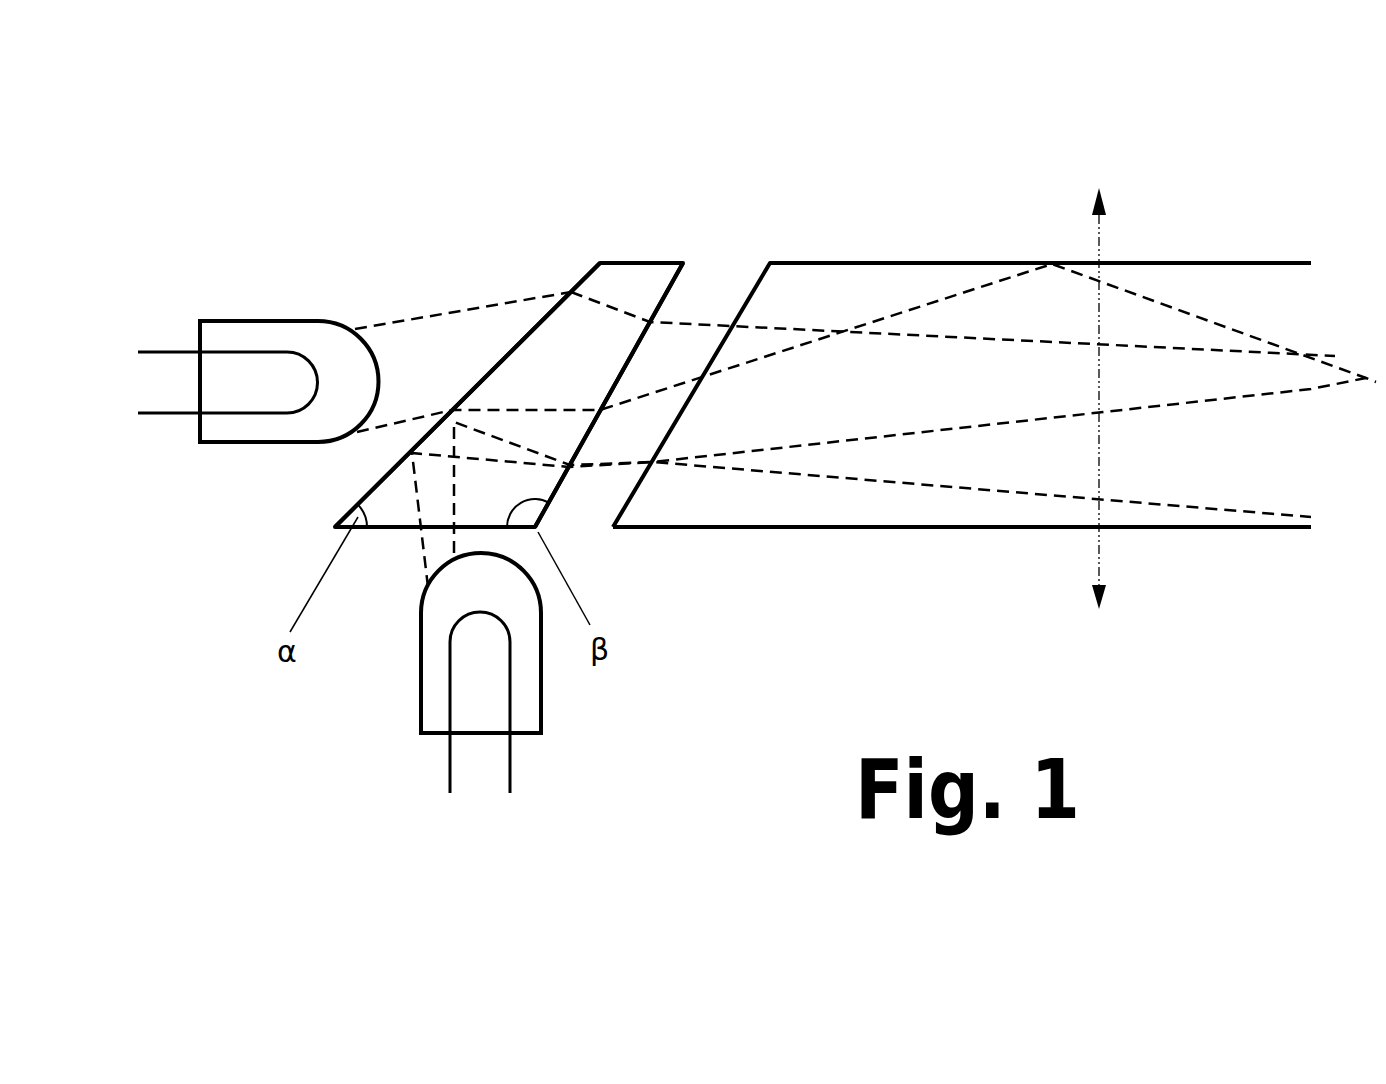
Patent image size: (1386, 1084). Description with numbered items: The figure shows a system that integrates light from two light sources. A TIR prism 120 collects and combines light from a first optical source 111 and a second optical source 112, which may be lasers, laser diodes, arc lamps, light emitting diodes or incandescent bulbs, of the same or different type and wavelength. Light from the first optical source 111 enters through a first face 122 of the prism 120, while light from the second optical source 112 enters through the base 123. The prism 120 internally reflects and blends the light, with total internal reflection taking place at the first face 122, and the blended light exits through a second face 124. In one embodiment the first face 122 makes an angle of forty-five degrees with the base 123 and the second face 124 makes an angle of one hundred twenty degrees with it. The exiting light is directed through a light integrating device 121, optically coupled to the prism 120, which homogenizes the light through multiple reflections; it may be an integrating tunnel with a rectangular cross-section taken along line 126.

The first optical source 111 is at (237, 428).
The second optical source 112 is at (427, 722).
The TIR prism 120 is at (639, 275).
The light integrating device 121 is at (916, 277).
The first face 122 is at (553, 299).
The base 123 is at (557, 493).
The second face 124 is at (647, 325).
The line 126 is at (1099, 420).